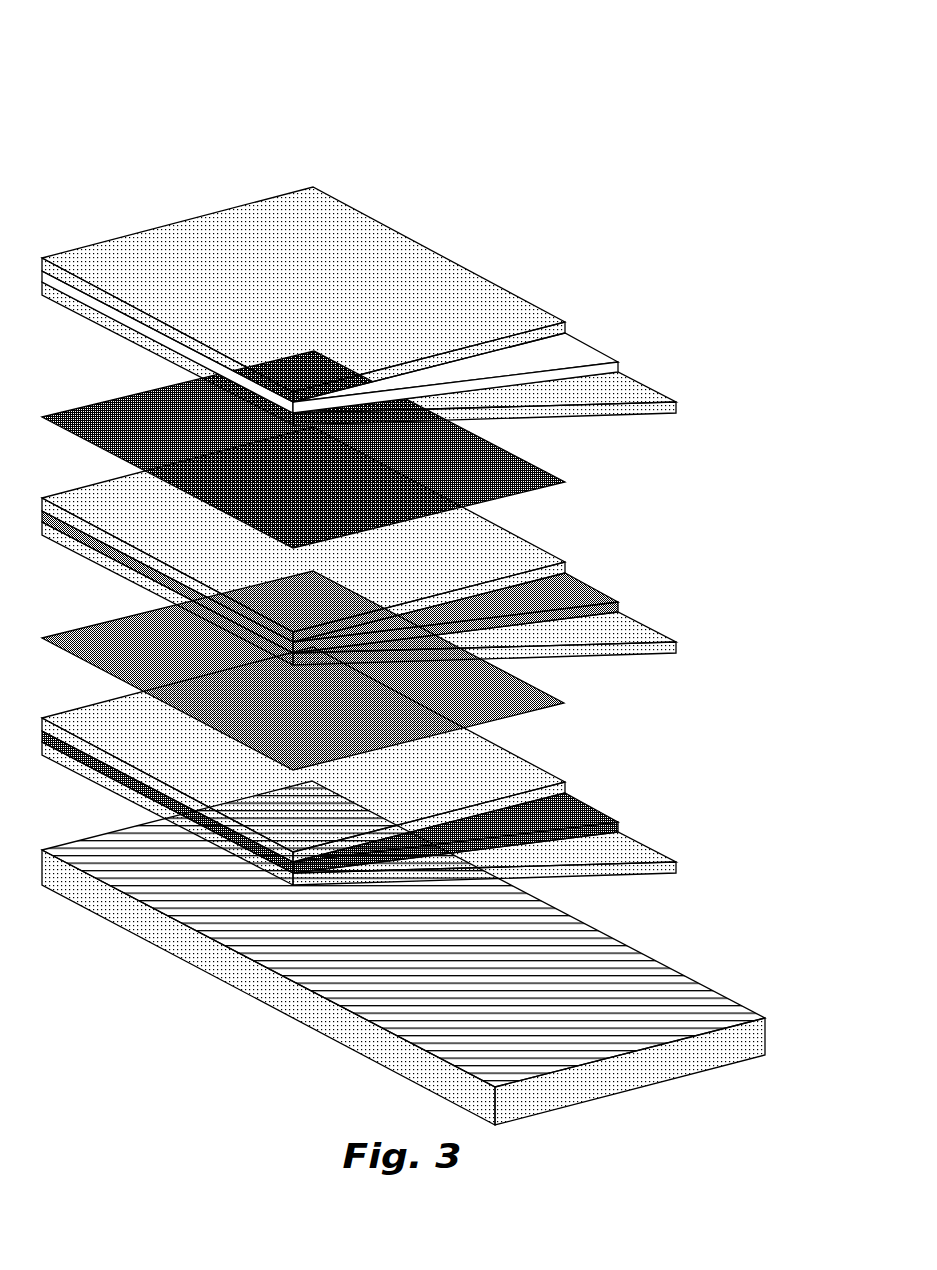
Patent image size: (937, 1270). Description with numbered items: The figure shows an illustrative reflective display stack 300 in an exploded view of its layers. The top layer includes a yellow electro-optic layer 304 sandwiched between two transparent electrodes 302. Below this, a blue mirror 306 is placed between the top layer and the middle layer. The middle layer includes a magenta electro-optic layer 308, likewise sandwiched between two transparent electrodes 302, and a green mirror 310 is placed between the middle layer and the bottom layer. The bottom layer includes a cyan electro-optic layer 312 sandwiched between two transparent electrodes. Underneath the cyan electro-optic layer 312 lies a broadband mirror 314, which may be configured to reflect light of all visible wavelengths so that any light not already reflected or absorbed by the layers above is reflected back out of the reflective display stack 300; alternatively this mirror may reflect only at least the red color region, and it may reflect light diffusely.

The reflective display stack 300 is at (204, 136).
The transparent electrode 302 is at (437, 272).
The yellow electro-optic layer 304 is at (573, 352).
The blue mirror 306 is at (553, 473).
The magenta electro-optic layer 308 is at (587, 594).
The green mirror 310 is at (552, 698).
The cyan electro-optic layer 312 is at (590, 815).
The broadband mirror 314 is at (643, 975).